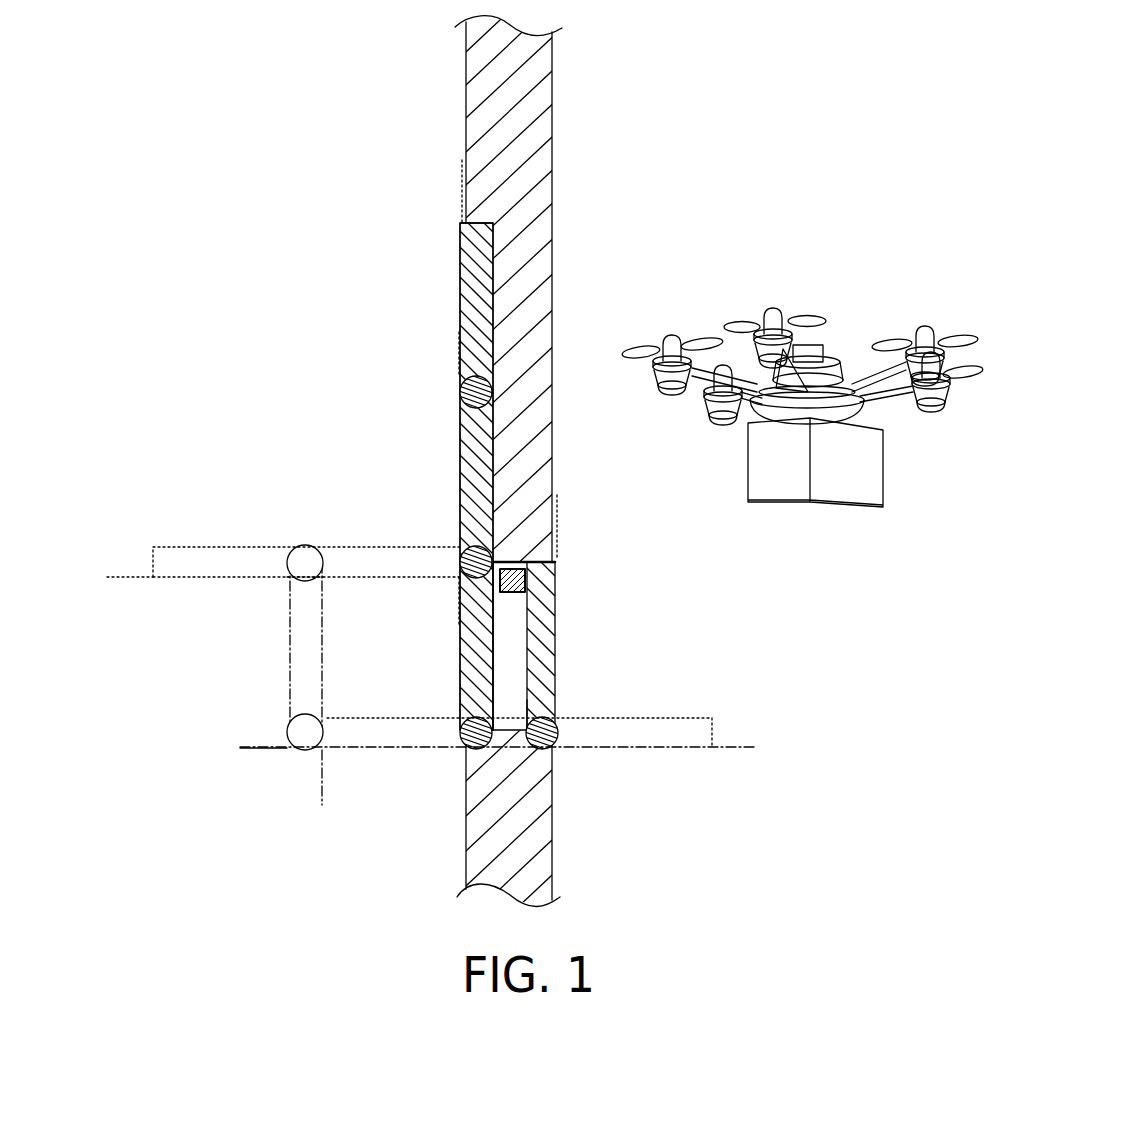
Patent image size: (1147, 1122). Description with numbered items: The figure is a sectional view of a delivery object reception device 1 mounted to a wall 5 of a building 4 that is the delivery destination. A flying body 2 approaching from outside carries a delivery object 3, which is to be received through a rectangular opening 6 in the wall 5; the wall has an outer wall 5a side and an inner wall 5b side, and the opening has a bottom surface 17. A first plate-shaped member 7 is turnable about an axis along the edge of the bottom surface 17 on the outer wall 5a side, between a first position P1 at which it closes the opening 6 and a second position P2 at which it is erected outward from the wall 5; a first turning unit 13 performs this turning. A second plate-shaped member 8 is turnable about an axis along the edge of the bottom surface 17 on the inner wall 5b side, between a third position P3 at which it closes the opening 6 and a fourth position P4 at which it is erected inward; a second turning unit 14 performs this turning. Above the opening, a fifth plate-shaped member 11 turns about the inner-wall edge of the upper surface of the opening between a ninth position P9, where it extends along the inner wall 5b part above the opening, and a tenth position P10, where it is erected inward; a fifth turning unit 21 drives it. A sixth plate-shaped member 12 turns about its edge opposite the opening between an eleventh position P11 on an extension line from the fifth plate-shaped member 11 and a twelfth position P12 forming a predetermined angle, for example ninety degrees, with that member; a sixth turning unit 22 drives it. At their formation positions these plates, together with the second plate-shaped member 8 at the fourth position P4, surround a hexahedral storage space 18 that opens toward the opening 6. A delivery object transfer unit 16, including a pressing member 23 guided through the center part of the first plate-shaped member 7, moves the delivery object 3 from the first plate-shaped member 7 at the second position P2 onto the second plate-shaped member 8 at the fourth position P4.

The delivery object reception device 1 is at (250, 345).
The flying body 2 is at (834, 325).
The delivery object 3 is at (838, 507).
The building 4 is at (566, 831).
The wall 5 is at (466, 850).
The outer wall 5a is at (552, 97).
The inner wall 5b is at (466, 100).
The rectangular opening 6 is at (506, 697).
The first plate-shaped member 7 is at (557, 630).
The second plate-shaped member 8 is at (460, 692).
The fifth plate-shaped member 11 is at (460, 500).
The sixth plate-shaped member 12 is at (460, 290).
The first turning unit 13 is at (560, 722).
The second turning unit 14 is at (458, 738).
The delivery object transfer unit 16 is at (290, 697).
The bottom surface 17 is at (553, 720).
The hexahedral storage space 18 is at (345, 670).
The fifth turning unit 21 is at (460, 565).
The sixth turning unit 22 is at (460, 392).
The pressing member 23 is at (523, 582).
The first position P1 is at (572, 517).
The second position P2 is at (515, 743).
The third position P3 is at (444, 611).
The fourth position P4 is at (254, 765).
The ninth position P9 is at (444, 345).
The tenth position P10 is at (273, 598).
The eleventh position P11 is at (265, 367).
The twelfth position P12 is at (319, 794).